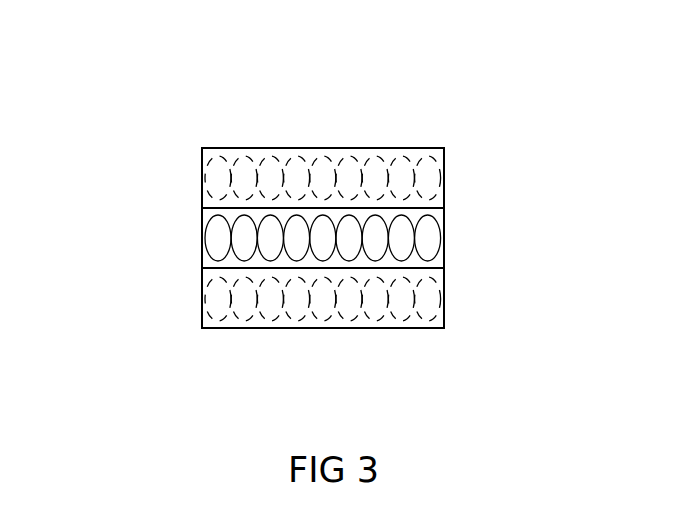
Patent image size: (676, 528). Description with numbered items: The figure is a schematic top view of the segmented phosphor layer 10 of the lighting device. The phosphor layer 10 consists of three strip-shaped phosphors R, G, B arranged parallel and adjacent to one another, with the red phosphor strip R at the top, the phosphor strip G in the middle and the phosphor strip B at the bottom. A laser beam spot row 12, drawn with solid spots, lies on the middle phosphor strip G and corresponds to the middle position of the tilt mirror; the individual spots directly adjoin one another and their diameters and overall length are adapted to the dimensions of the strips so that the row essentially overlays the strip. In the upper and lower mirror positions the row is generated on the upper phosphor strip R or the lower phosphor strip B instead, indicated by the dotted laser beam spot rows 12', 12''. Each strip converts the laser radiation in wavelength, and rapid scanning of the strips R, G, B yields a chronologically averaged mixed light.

The phosphor layer 10 is at (321, 134).
The laser beam spot row 12 is at (252, 241).
The laser beam spot row 12' is at (249, 182).
The laser beam spot row 12'' is at (248, 299).
The red phosphor strip R is at (444, 156).
The green phosphor strip G is at (444, 215).
The blue phosphor strip B is at (444, 278).